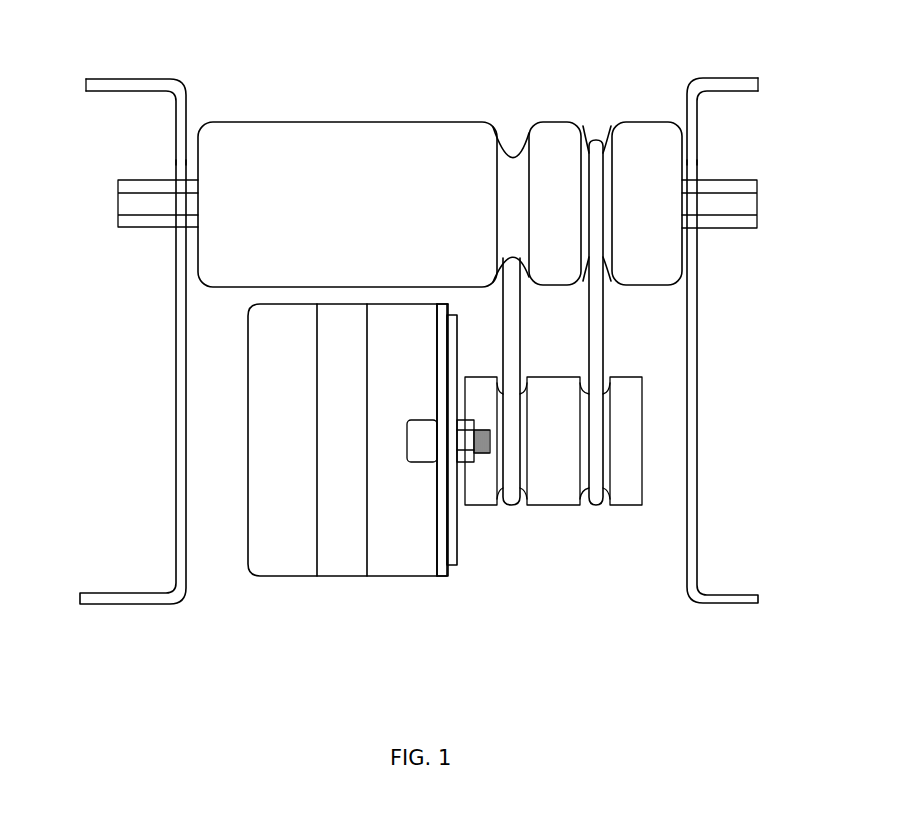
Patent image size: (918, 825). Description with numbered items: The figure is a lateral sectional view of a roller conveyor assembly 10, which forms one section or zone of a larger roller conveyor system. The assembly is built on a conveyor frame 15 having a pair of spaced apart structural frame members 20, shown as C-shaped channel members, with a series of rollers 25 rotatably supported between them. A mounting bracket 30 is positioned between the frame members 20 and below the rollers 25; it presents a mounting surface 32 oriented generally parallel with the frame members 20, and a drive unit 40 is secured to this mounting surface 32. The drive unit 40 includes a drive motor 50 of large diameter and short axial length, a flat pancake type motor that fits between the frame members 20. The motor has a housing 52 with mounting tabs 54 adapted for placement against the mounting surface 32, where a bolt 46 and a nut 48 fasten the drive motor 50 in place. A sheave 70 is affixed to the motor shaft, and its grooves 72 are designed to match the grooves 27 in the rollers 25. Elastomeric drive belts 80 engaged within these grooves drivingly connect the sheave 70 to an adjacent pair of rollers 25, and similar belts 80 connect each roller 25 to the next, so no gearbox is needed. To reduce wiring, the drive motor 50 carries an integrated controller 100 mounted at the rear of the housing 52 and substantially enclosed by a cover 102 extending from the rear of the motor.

The roller conveyor assembly 10 is at (657, 46).
The conveyor frame 15 is at (112, 106).
The structural frame members 20 is at (176, 398).
The rollers 25 is at (282, 121).
The grooves 27 is at (505, 148).
The mounting bracket 30 is at (451, 566).
The mounting surface 32 is at (457, 530).
The drive unit 40 is at (299, 614).
The bolt 46 is at (421, 463).
The nut 48 is at (468, 419).
The drive motor 50 is at (378, 583).
The housing 52 is at (408, 578).
The mounting tabs 54 is at (445, 324).
The sheave 70 is at (643, 431).
The grooves 72 is at (521, 500).
The elastomeric drive belts 80 is at (522, 342).
The integrated controller 100 is at (278, 584).
The cover 102 is at (262, 580).